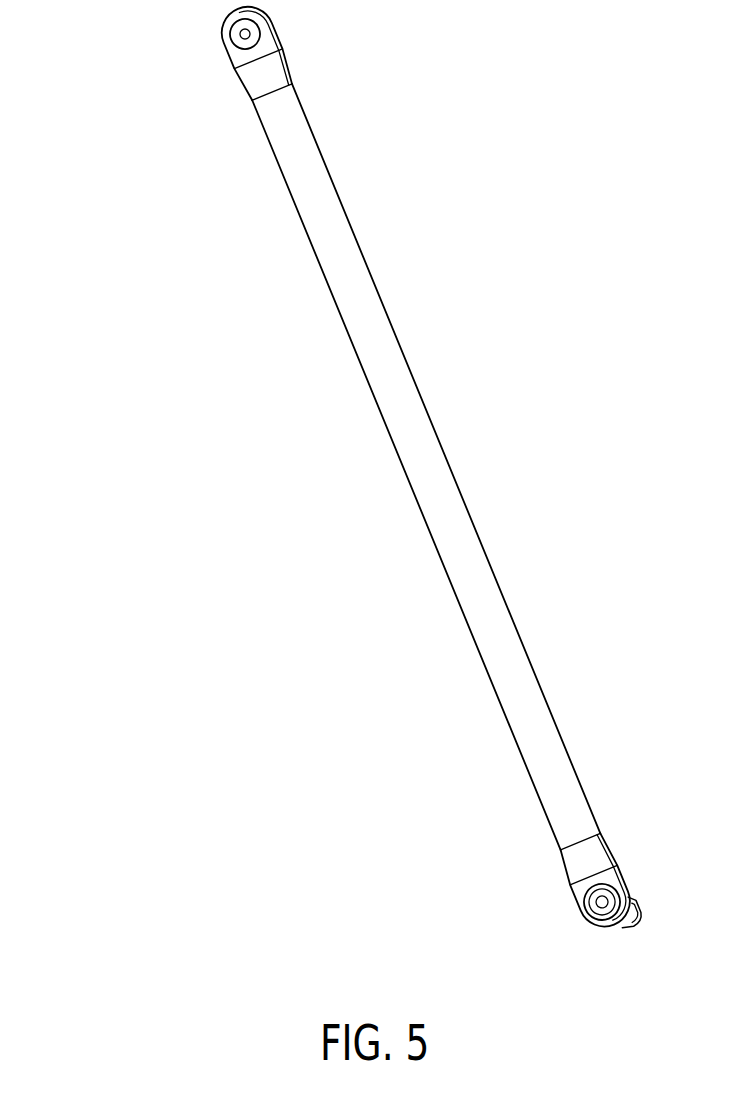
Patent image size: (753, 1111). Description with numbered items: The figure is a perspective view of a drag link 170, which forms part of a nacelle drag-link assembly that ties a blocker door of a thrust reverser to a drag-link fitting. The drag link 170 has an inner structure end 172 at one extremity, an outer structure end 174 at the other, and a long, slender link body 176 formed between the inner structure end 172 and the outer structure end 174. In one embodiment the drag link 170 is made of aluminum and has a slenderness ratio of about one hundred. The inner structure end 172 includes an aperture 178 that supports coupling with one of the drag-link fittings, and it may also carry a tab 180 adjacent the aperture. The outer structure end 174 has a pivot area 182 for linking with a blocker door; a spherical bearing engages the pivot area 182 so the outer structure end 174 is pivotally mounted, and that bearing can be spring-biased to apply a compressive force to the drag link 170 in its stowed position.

The drag link 170 is at (128, 377).
The inner structure end 172 is at (558, 888).
The outer structure end 174 is at (279, 33).
The link body 176 is at (311, 247).
The aperture 178 is at (603, 901).
The tab 180 is at (628, 927).
The pivot area 182 is at (229, 33).